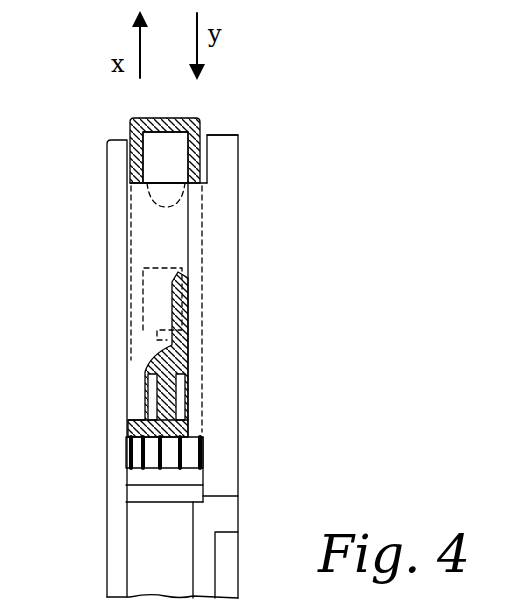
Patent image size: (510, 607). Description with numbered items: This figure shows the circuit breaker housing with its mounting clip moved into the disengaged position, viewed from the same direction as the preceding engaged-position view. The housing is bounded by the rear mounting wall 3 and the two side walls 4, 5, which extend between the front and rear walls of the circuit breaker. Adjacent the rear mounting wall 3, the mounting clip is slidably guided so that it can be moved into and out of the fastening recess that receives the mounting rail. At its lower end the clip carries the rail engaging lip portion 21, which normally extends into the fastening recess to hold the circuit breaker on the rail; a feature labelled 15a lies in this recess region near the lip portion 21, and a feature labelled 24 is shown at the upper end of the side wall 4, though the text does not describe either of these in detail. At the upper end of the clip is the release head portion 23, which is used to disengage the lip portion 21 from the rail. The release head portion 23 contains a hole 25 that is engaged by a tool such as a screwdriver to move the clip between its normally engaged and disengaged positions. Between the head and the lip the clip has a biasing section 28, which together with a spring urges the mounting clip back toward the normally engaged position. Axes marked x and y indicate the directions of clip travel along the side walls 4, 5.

The rear mounting wall 3 is at (150, 247).
The side wall 4 is at (238, 232).
The side wall 5 is at (105, 310).
The shoulder 15a is at (190, 495).
The rail engaging lip portion 21 is at (148, 474).
The release head portion 23 is at (130, 124).
The abutment 24 is at (208, 138).
The hole 25 is at (160, 153).
The biasing section 28 is at (180, 357).